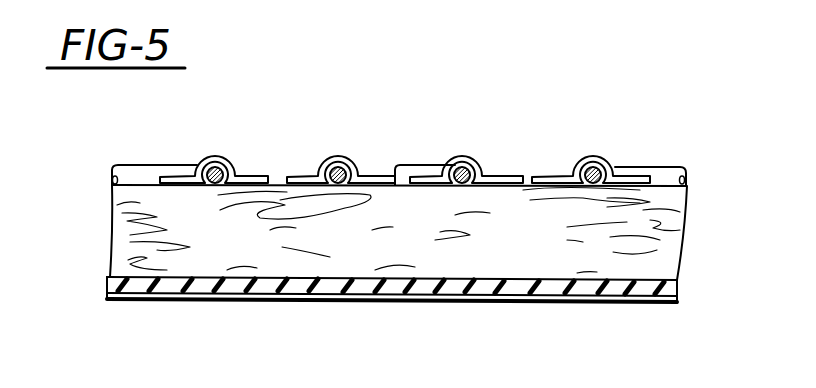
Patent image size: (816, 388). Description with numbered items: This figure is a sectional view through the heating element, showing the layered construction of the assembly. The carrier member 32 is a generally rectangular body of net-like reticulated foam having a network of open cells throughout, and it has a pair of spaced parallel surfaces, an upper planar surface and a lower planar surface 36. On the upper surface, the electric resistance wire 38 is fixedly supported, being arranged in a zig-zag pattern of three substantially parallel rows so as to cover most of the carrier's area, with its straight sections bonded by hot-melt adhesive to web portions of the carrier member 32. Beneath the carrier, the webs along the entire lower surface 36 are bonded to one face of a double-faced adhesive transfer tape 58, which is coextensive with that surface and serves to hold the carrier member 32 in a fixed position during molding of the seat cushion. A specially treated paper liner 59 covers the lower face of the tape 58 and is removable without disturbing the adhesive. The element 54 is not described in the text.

The carrier member 32 is at (676, 231).
The lower planar surface 36 is at (397, 278).
The electric resistance wire 38 is at (205, 173).
The wire clip 54 is at (248, 167).
The double-faced adhesive transfer tape 58 is at (110, 285).
The paper liner 59 is at (616, 303).